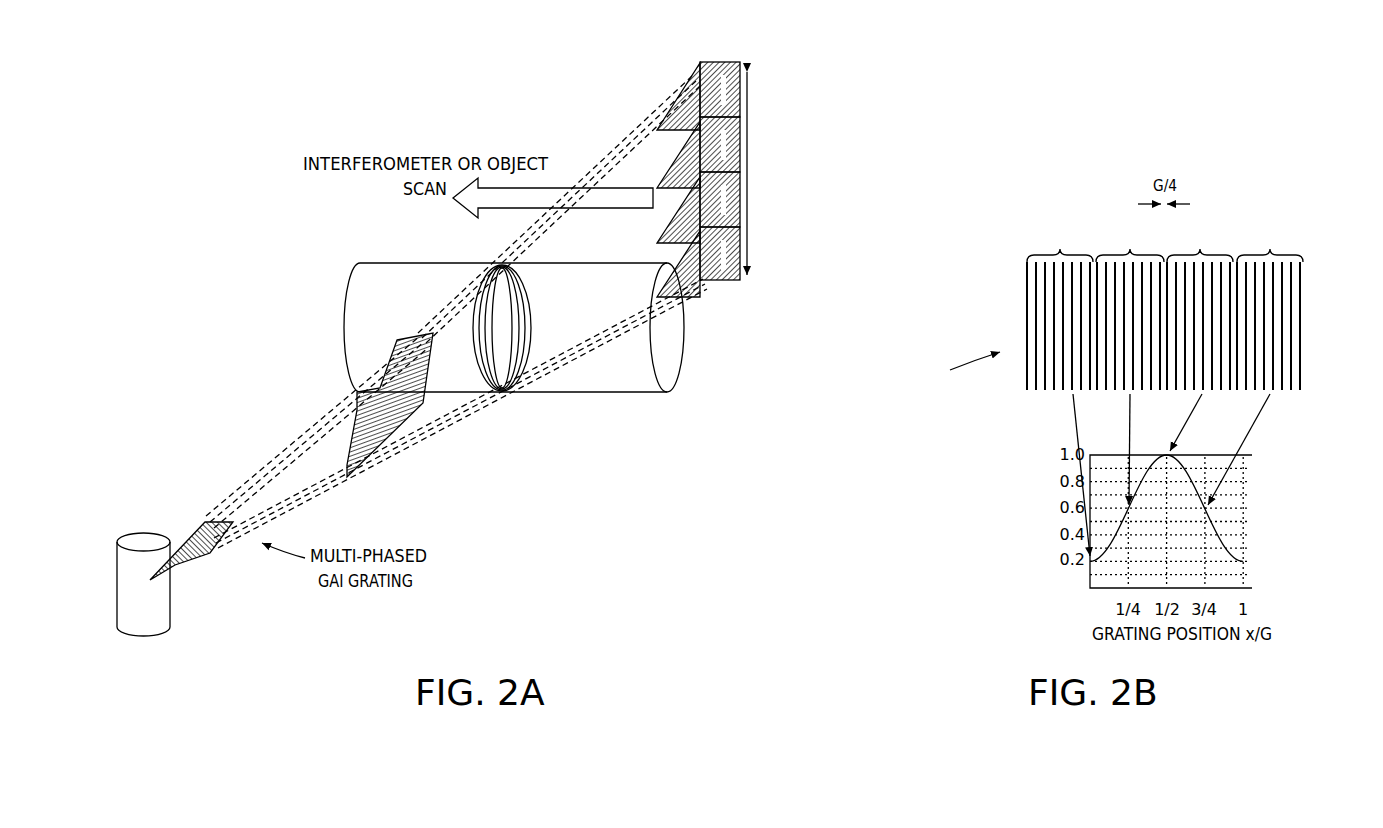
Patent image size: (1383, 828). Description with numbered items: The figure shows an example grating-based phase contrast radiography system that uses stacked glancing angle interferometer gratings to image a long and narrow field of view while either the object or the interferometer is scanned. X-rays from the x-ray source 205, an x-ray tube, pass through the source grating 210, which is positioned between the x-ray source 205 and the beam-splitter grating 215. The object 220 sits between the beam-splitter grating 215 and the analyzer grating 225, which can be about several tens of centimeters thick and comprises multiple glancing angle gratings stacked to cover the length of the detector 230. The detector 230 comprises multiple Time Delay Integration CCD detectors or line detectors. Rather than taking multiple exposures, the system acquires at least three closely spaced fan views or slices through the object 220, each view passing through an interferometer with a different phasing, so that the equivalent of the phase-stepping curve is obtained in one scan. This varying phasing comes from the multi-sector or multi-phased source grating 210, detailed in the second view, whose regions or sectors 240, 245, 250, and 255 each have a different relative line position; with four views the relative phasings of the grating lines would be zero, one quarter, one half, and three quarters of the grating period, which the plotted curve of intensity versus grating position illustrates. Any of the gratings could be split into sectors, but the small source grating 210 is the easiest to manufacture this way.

In FIG. 2A, the x-ray source 205 is at (170, 600).
In FIG. 2A, the source grating G0 210 is at (212, 554).
In FIG. 2B, the source grating G0 210 is at (1305, 140).
In FIG. 2A, the beam-splitter grating G1 215 is at (358, 400).
In FIG. 2A, the object 220 is at (686, 358).
In FIG. 2A, the analyzer grating G2 225 is at (690, 85).
In FIG. 2A, the detector 230 is at (745, 66).
In FIG. 2B, the grating sector 240 is at (1059, 249).
In FIG. 2B, the grating sector 245 is at (1129, 249).
In FIG. 2B, the grating sector 250 is at (1200, 249).
In FIG. 2B, the grating sector 255 is at (1270, 249).